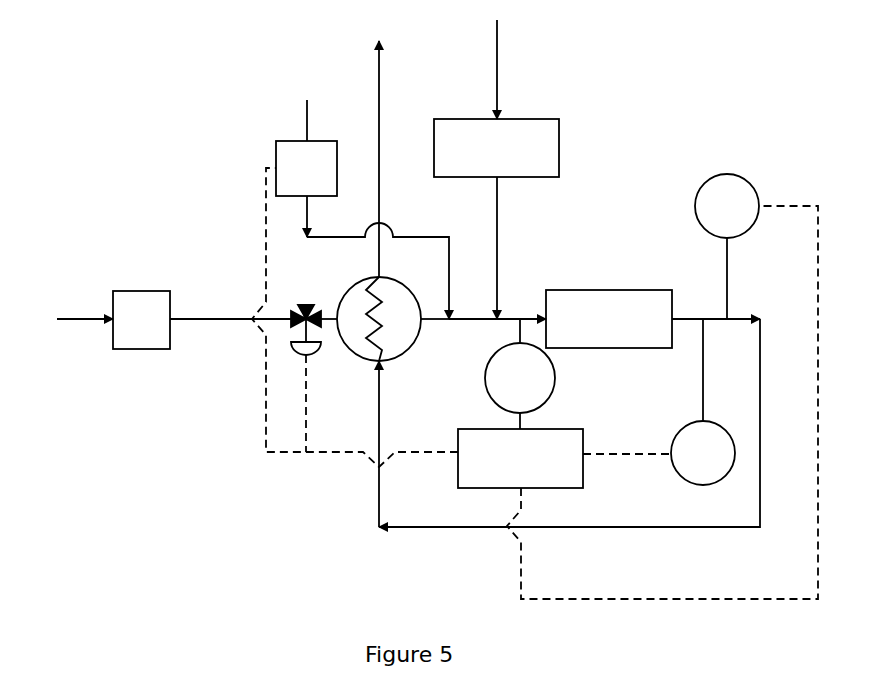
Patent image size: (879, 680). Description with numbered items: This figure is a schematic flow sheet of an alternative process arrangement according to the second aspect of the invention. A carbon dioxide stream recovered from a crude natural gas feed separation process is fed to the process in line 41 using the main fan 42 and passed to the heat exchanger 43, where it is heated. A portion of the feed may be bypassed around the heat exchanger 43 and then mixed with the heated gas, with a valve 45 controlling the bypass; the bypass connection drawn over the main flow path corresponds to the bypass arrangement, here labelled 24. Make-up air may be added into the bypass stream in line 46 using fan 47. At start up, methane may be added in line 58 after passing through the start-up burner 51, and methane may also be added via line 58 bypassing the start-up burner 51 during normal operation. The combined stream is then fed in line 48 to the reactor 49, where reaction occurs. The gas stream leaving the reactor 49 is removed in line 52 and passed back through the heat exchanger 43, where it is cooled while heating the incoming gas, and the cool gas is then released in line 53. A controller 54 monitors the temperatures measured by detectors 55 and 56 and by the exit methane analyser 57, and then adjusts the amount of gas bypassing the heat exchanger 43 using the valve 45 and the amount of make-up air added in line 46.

The bypass line 24 is at (410, 237).
The line 41 is at (84, 318).
The main fan 42 is at (147, 291).
The heat exchanger 43 is at (407, 355).
The valve 45 is at (305, 322).
The line 46 is at (307, 198).
The fan 47 is at (278, 136).
The line 48 is at (487, 322).
The reactor 49 is at (623, 290).
The start-up burner 51 is at (525, 119).
The line 52 is at (622, 528).
The line 53 is at (379, 112).
The controller 54 is at (583, 429).
The detector 55 is at (553, 373).
The detector 56 is at (683, 482).
The exit methane analyser 57 is at (728, 173).
The line 58 is at (497, 72).